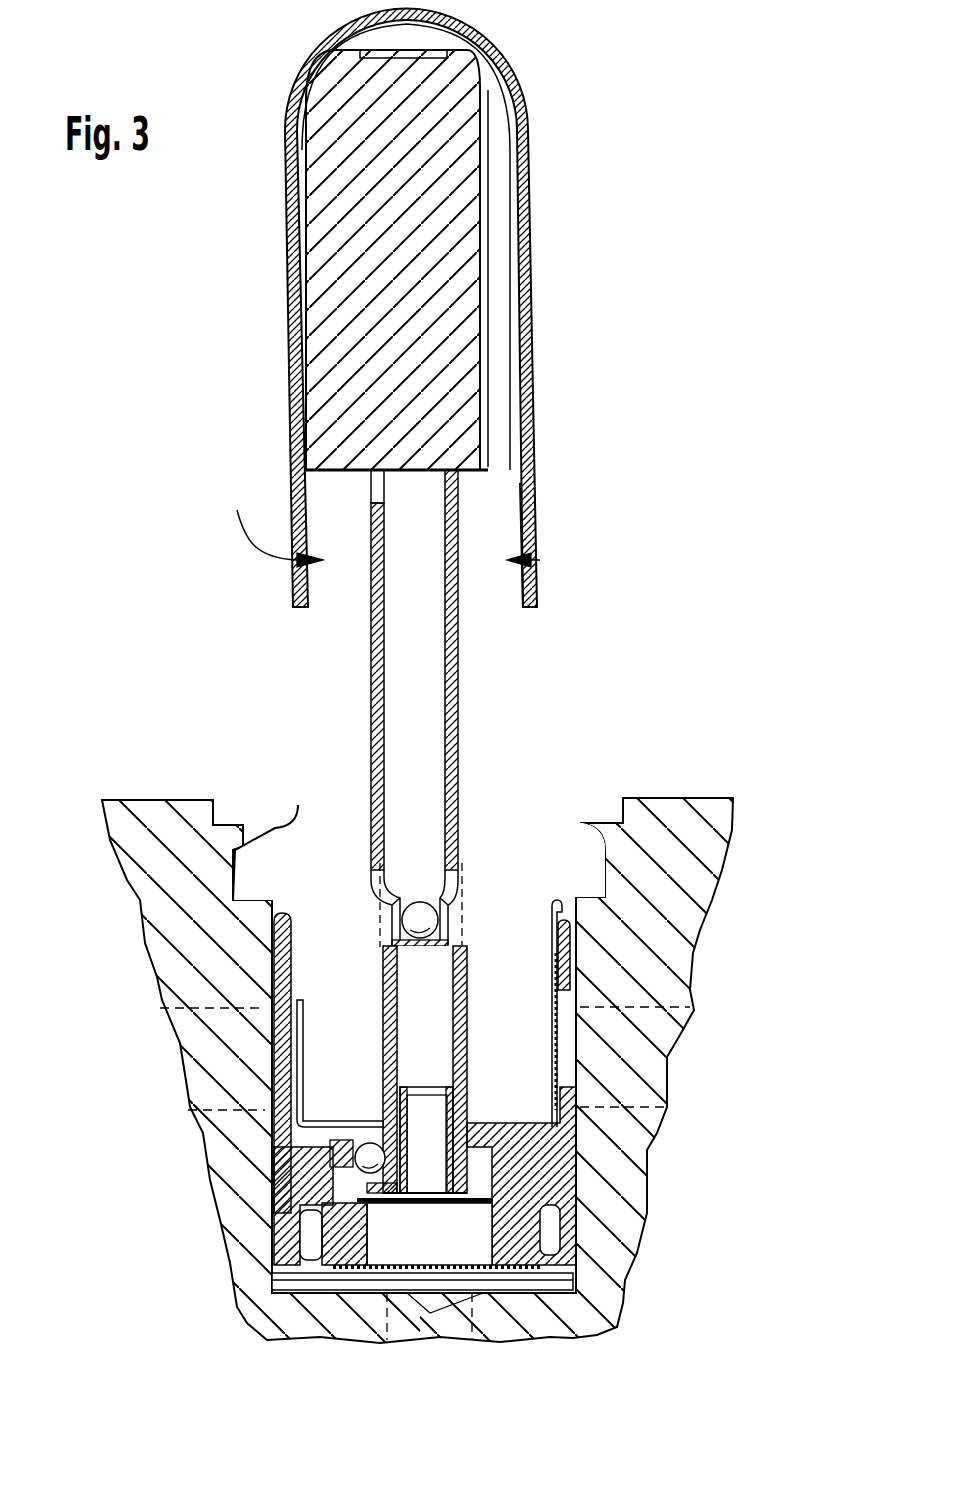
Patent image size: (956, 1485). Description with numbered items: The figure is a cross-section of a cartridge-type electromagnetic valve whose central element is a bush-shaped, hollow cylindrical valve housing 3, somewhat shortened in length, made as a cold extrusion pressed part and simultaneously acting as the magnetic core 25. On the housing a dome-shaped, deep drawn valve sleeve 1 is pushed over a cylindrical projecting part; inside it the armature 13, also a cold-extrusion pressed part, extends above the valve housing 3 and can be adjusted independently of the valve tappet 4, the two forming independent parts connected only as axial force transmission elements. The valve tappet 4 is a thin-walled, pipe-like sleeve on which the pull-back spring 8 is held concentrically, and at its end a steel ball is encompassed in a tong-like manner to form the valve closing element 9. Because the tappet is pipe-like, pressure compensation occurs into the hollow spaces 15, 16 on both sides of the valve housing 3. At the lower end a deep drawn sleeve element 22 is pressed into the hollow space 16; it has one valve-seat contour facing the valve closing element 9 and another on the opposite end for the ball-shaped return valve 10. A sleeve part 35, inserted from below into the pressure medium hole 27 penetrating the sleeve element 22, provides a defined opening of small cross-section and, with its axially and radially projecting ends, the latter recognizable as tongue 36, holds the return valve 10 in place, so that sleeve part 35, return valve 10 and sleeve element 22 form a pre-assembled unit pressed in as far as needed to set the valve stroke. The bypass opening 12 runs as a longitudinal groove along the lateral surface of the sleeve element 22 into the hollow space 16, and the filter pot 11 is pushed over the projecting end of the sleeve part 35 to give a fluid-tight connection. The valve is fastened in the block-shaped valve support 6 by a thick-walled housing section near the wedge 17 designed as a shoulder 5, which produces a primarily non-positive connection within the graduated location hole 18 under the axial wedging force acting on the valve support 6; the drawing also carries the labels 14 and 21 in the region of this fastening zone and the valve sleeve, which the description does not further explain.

The valve sleeve 1 is at (292, 184).
The valve housing 3 is at (500, 663).
The magnetic core 25 is at (521, 545).
The valve tappet 4 is at (460, 505).
The shoulder 5 is at (225, 815).
The valve support 6 is at (687, 872).
The pull-back spring 8 is at (458, 857).
The valve closing element 9 is at (420, 920).
The return valve 10 is at (355, 1155).
The filter pot 11 is at (303, 1193).
The bypass opening 12 is at (377, 1017).
The armature 13 is at (443, 293).
The flange 14 is at (297, 737).
The hollow space 15 is at (433, 43).
The hollow space 16 is at (390, 943).
The wedge 17 is at (177, 810).
The location hole 18 is at (233, 838).
The force arrows 21 is at (372, 524).
The sleeve element 22 is at (453, 1015).
The pressure medium hole 27 is at (428, 1182).
The sleeve part 35 is at (390, 1205).
The tongue 36 is at (320, 1203).